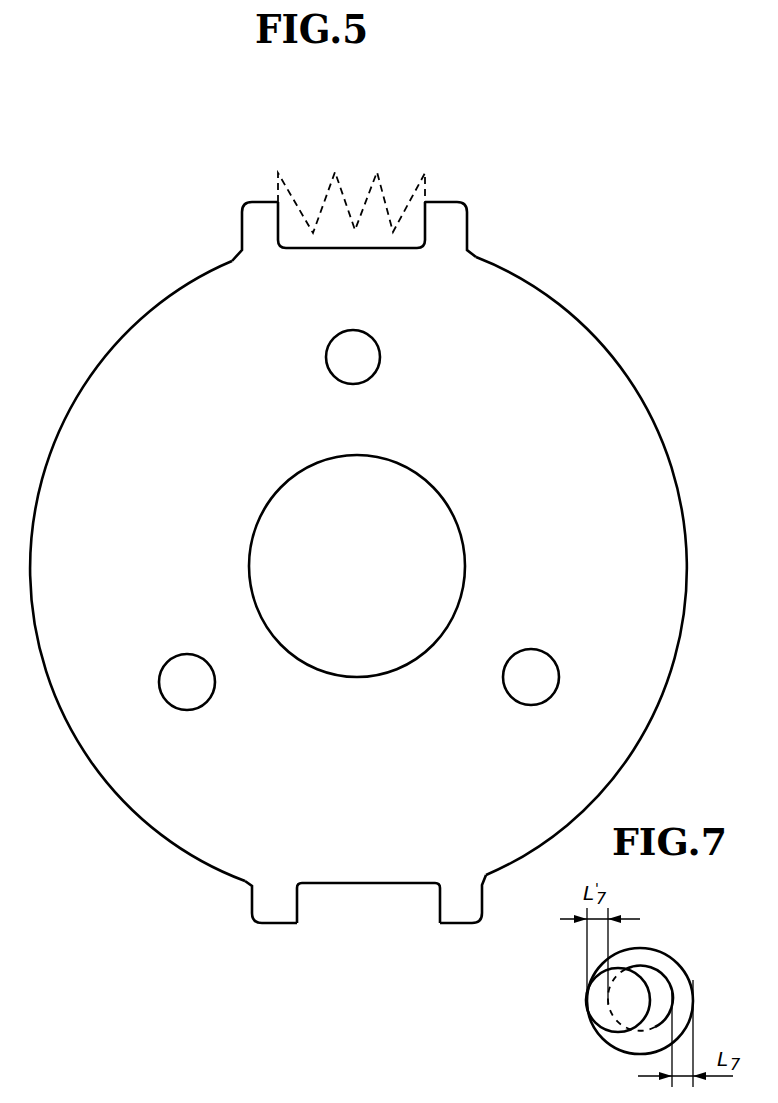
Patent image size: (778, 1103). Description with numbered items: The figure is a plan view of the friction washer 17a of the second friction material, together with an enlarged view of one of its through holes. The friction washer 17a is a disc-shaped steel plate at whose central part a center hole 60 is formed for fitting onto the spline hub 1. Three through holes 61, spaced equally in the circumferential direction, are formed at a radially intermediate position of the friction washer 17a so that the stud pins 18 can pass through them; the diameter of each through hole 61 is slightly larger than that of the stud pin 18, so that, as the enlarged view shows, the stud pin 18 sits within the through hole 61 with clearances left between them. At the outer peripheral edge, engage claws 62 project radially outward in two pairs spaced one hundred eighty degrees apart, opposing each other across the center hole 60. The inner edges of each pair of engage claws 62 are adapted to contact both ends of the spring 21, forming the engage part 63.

In FIG. 5, the friction washer 17a is at (645, 303).
In FIG. 5, the spring 21 is at (277, 172).
In FIG. 5, the center hole 60 is at (375, 558).
In FIG. 5, the through hole 61 is at (379, 355).
In FIG. 7, the through hole 61 is at (675, 970).
In FIG. 5, the engage claw 62 is at (255, 222).
In FIG. 5, the engage part 63 is at (359, 190).
In FIG. 5, the stud pin 18 is at (358, 369).
In FIG. 7, the stud pin 18 is at (625, 968).
In FIG. 5, the spline hub 1 is at (436, 551).